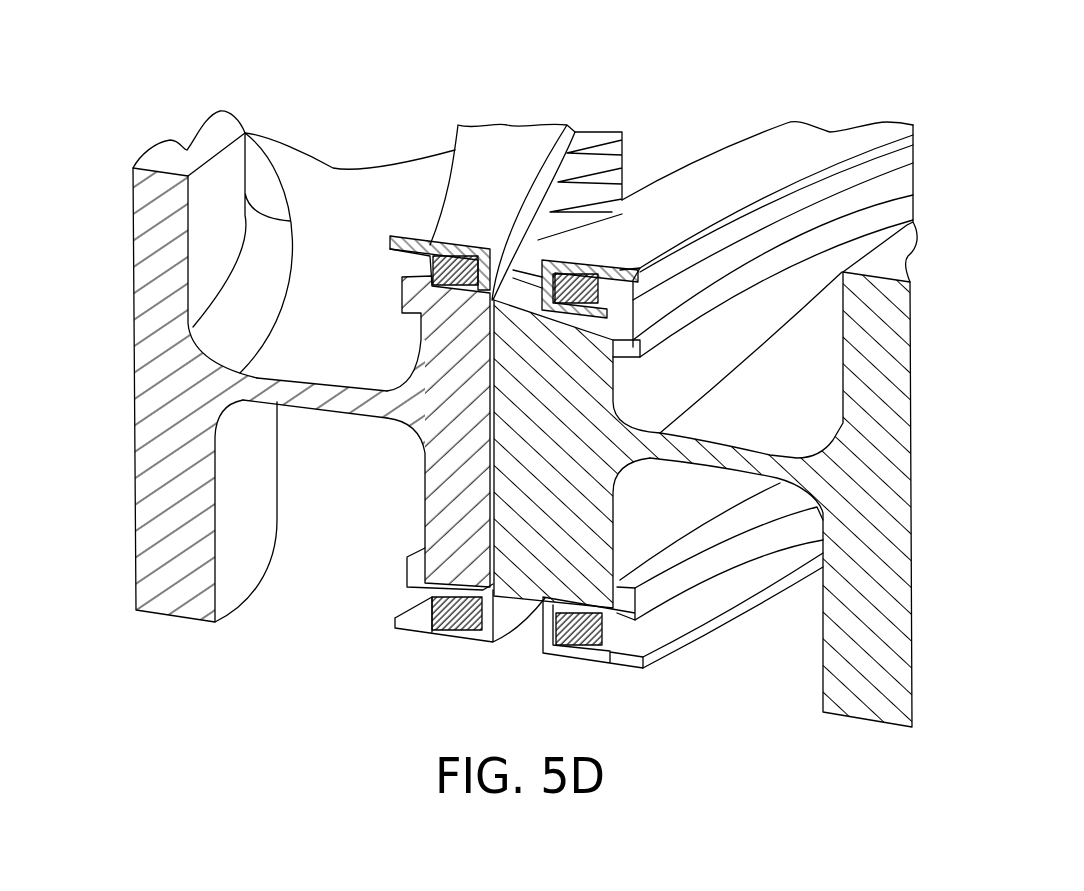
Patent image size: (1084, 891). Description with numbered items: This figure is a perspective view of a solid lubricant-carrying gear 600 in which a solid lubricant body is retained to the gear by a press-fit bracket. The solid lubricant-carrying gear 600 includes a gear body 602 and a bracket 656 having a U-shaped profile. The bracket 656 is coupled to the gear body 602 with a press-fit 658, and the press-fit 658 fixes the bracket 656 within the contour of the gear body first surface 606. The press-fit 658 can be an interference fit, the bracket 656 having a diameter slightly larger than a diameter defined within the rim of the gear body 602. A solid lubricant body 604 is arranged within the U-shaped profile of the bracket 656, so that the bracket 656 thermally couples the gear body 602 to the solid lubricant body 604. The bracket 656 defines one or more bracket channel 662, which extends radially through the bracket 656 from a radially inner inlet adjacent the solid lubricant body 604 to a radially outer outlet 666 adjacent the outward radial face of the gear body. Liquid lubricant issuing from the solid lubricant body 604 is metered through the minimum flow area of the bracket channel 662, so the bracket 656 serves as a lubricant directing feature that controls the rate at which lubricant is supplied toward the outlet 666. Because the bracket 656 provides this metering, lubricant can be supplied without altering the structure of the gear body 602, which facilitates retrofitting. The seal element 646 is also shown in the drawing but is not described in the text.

The solid lubricant-carrying gear 600 is at (489, 382).
The gear body 602 is at (157, 553).
The solid lubricant body 604 is at (435, 228).
The gear body first surface 606 is at (350, 365).
The seal 646 is at (463, 283).
The bracket 656 is at (522, 135).
The press-fit 658 is at (437, 318).
The bracket channel 662 is at (577, 130).
The radially outer outlet 666 is at (510, 332).